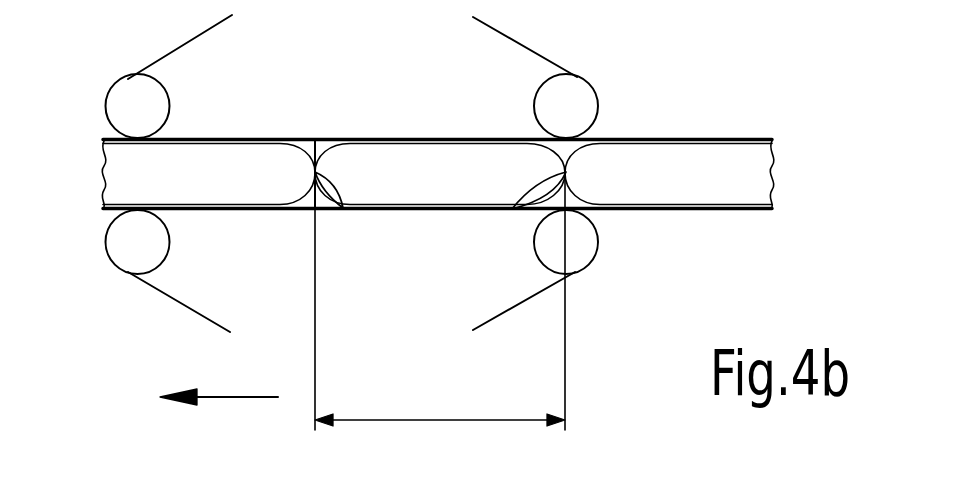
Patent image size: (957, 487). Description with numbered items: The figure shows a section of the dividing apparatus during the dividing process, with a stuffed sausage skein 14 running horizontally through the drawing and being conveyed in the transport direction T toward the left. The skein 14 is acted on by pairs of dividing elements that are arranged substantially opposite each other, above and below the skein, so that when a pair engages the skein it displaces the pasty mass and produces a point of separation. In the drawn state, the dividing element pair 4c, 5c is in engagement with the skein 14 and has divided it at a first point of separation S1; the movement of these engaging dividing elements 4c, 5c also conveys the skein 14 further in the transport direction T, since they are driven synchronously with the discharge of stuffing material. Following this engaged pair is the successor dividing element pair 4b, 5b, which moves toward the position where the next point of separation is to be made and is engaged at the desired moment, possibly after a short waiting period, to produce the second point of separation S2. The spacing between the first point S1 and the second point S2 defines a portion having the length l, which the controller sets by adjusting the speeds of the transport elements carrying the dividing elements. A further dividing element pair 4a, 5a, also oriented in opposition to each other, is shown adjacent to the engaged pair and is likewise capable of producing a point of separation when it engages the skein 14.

The stuffed sausage skein 14 is at (730, 155).
The dividing element 4a is at (107, 97).
The dividing element 4b is at (573, 138).
The dividing element 4c is at (328, 137).
The dividing element 5a is at (107, 258).
The dividing element 5b is at (567, 178).
The dividing element 5c is at (313, 192).
The first point of separation S1 is at (343, 210).
The second point of separation S2 is at (512, 210).
The transport direction T is at (219, 381).
The length of the portion l is at (440, 302).